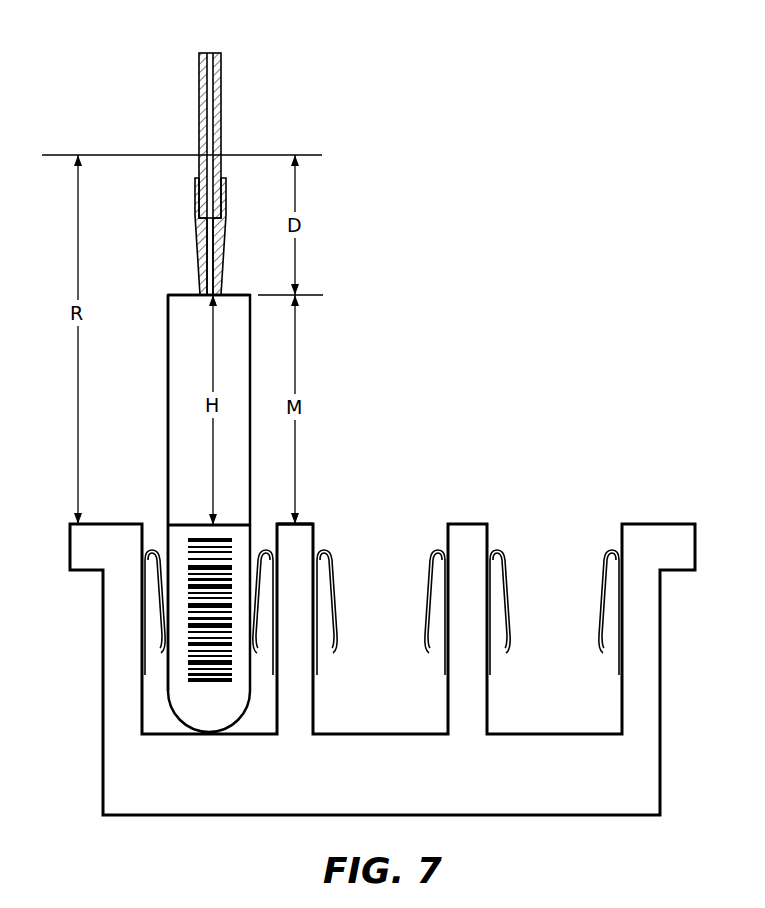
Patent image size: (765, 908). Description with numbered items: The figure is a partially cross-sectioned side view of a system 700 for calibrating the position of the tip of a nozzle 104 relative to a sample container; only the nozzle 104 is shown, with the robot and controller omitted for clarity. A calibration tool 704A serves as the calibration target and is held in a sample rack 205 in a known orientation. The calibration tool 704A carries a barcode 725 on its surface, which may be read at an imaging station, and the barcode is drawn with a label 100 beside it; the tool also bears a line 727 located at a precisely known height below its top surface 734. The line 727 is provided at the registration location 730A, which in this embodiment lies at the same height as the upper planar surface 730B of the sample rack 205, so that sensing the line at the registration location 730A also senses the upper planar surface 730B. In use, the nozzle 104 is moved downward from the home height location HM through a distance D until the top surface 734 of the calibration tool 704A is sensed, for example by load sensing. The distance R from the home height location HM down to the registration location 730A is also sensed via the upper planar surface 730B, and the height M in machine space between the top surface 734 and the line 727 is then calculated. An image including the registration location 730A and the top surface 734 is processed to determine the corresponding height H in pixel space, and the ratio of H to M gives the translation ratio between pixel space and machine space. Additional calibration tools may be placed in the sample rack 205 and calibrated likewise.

The nozzle 104 is at (224, 80).
The top surface 734 is at (192, 293).
The calibration tool 704A is at (177, 290).
The system 700 is at (395, 348).
The registration location 730A is at (200, 525).
The line 727 is at (187, 525).
The upper planar surface 730B is at (303, 524).
The sample rack 205 is at (102, 668).
The barcode 725 is at (138, 631).
The barcode 100 is at (218, 610).
The home height location HM is at (260, 155).